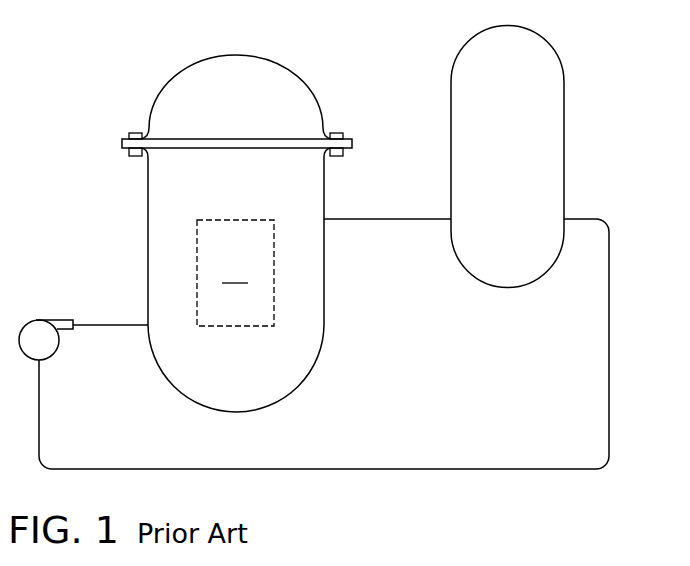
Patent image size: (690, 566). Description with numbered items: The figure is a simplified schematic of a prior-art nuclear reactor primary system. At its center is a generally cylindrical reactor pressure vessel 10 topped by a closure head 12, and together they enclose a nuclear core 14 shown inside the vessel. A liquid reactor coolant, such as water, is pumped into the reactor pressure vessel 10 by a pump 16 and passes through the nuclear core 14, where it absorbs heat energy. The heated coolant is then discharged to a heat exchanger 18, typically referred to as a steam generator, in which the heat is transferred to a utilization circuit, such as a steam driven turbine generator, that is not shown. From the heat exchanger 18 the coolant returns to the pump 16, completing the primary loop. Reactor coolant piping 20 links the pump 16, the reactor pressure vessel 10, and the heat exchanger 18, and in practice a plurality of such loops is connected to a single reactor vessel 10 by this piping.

The reactor pressure vessel 10 is at (236, 272).
The closure head 12 is at (155, 98).
The nuclear core 14 is at (197, 264).
The pump 16 is at (35, 320).
The heat exchanger 18 is at (565, 108).
The reactor coolant piping 20 is at (610, 415).